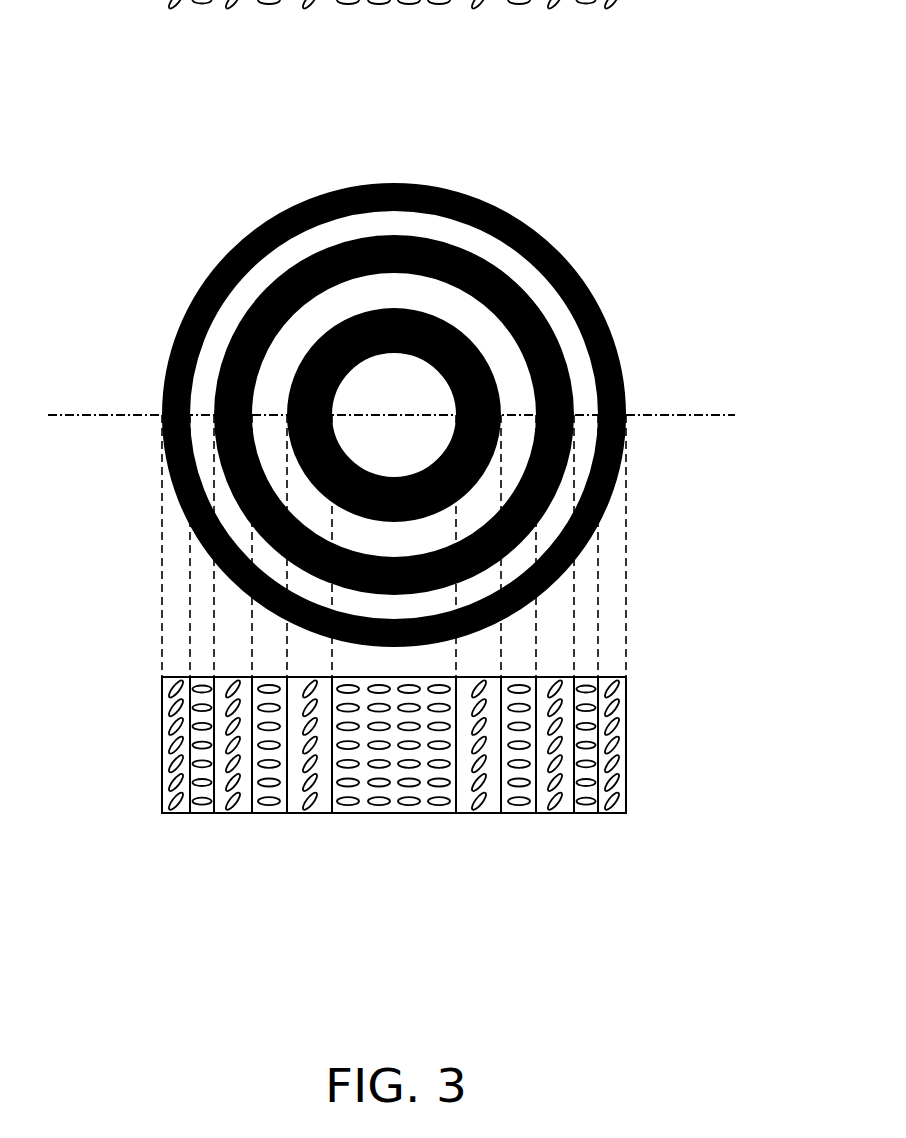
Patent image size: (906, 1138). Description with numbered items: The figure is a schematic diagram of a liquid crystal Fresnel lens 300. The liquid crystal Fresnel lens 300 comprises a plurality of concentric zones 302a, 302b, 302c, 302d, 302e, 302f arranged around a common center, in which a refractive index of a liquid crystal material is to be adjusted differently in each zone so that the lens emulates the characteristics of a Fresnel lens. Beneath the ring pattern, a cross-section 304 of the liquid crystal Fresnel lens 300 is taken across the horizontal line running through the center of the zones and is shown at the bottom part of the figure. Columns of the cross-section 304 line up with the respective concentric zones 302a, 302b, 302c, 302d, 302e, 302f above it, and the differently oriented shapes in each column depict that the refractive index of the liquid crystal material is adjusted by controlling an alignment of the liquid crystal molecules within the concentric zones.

The liquid crystal Fresnel lens 300 is at (411, 389).
The concentric zone 302a is at (254, 306).
The concentric zone 302b is at (288, 286).
The concentric zone 302c is at (356, 286).
The concentric zone 302d is at (394, 297).
The concentric zone 302e is at (394, 312).
The concentric zone 302f is at (394, 342).
The cross-section 304 is at (461, 406).